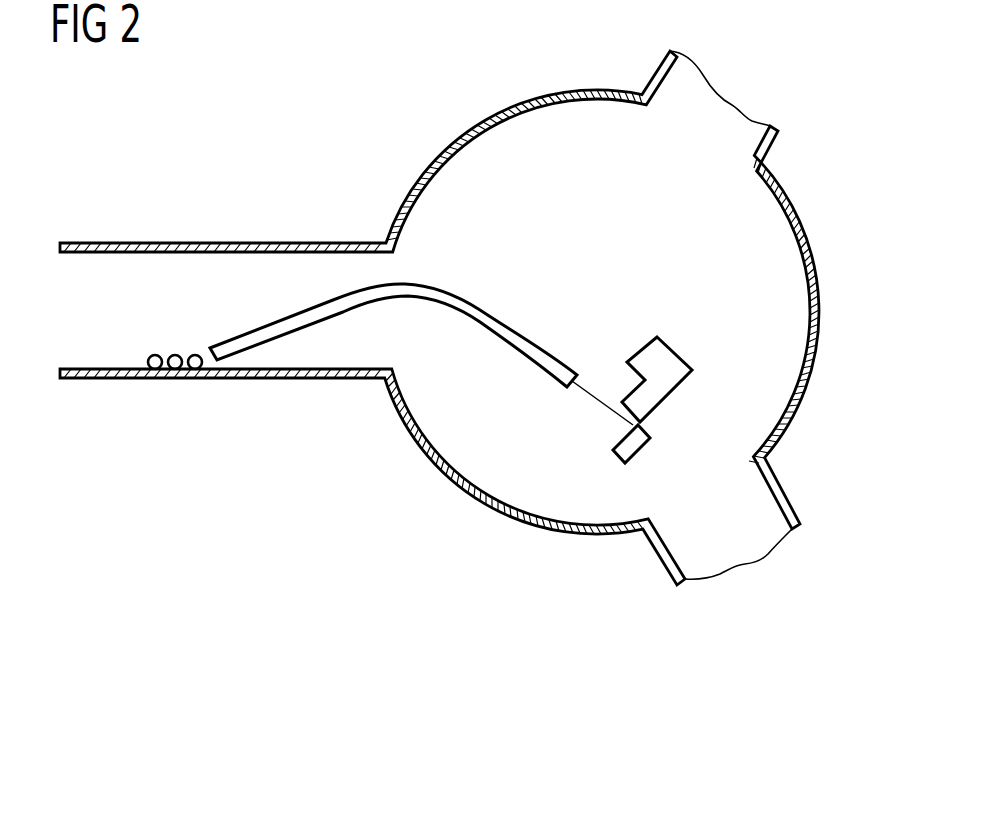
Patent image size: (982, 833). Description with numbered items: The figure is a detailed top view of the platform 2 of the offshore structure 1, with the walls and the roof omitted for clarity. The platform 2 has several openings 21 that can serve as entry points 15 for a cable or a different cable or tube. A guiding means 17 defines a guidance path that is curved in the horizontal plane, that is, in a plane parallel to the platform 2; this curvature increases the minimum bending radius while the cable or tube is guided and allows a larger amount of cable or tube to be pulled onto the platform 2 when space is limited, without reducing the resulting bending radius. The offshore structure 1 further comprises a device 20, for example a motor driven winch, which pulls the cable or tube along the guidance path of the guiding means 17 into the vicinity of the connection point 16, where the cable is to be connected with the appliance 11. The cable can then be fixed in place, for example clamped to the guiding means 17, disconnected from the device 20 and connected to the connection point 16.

The offshore structure 1 is at (440, 118).
The platform 2 is at (495, 473).
The appliance 11 is at (677, 350).
The entry point 15 is at (170, 380).
The connection point 16 is at (600, 420).
The guiding means 17 is at (305, 295).
The device for pulling the cable or tube 20 is at (640, 450).
The openings 21 is at (178, 335).